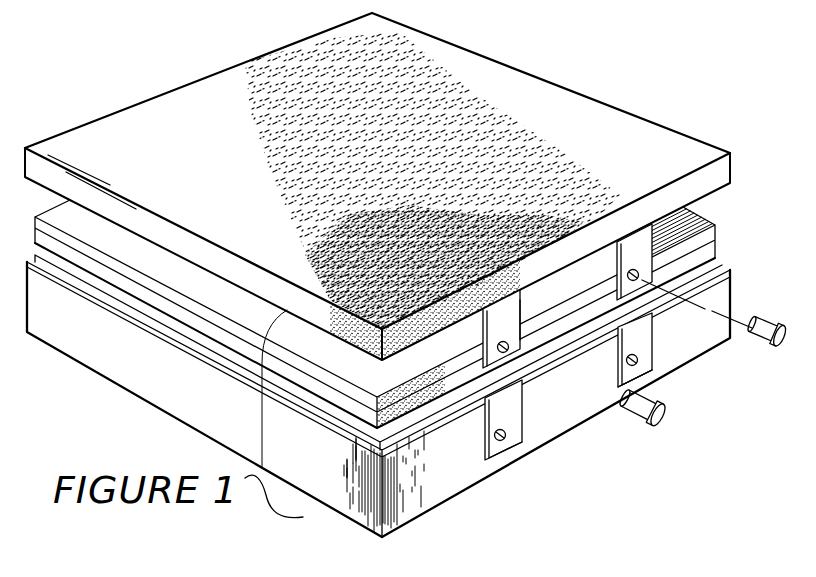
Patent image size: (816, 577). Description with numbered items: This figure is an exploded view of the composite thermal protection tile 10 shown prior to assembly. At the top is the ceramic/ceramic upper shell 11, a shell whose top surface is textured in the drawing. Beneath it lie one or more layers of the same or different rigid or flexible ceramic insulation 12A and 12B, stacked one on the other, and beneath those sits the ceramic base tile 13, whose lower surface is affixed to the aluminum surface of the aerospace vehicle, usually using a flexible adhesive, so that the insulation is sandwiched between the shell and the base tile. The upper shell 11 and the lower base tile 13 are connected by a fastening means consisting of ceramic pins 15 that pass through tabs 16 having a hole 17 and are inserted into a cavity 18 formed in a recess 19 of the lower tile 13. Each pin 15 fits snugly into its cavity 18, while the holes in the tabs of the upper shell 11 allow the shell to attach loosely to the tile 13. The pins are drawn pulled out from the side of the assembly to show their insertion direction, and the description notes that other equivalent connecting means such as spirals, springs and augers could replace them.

The composite thermal protection tile 10 is at (706, 98).
The ceramic/ceramic upper shell 11 is at (731, 153).
The ceramic insulation layer 12A is at (717, 227).
The ceramic insulation layer 12B is at (718, 244).
The ceramic base tile 13 is at (733, 298).
The ceramic pin 15 is at (632, 418).
The tab 16 is at (522, 317).
The hole 17 is at (507, 355).
The cavity 18 is at (638, 360).
The recess 19 is at (646, 377).